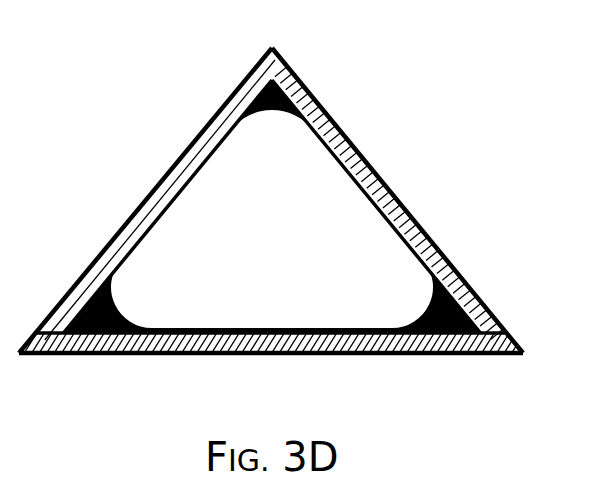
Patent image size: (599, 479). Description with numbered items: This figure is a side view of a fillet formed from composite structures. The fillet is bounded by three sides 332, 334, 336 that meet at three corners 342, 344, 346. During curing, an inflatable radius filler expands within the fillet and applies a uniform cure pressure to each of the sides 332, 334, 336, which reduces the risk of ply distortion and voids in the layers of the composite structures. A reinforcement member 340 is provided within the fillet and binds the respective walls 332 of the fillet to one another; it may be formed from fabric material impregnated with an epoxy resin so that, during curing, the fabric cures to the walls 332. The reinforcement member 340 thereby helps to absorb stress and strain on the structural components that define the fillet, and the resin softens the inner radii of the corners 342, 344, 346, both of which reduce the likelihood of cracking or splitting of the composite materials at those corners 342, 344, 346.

The side 332 is at (167, 170).
The side 334 is at (376, 177).
The side 336 is at (275, 332).
The reinforcement member 340 is at (338, 130).
The corner 342 is at (295, 73).
The corner 344 is at (462, 282).
The corner 346 is at (110, 332).